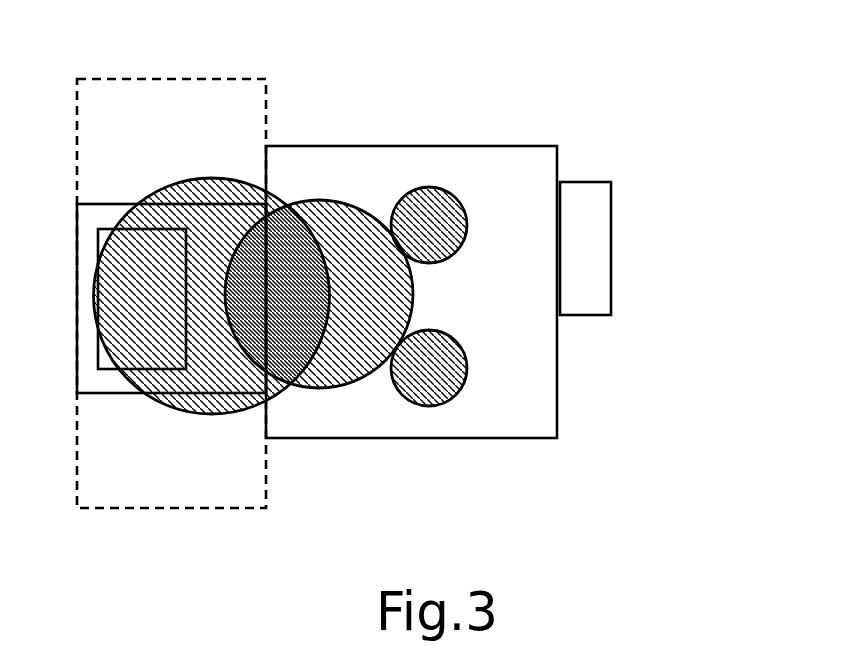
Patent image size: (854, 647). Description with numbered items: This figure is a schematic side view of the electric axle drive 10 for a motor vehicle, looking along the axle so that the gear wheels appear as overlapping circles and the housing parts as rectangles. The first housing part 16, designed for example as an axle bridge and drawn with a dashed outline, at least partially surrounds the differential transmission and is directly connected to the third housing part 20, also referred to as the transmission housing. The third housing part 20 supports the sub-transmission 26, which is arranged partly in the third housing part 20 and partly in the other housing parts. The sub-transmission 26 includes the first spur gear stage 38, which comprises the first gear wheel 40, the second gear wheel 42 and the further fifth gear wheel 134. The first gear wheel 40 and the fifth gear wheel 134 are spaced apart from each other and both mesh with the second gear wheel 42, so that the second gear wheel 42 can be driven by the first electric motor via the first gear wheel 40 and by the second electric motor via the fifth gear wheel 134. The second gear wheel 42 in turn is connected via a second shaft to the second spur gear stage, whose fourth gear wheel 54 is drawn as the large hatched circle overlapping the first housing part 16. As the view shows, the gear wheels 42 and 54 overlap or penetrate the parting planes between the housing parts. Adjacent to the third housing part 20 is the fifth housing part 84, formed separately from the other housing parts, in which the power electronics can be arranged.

The electric axle drive 10 is at (520, 105).
The first housing part 16 is at (190, 508).
The third housing part 20 is at (560, 157).
The sub-transmission 26 is at (523, 404).
The first spur gear stage 38 is at (416, 440).
The first gear wheel 40 is at (461, 193).
The second gear wheel 42 is at (330, 392).
The fourth gear wheel 54 is at (203, 178).
The fifth housing part 84 is at (611, 208).
The fifth gear wheel 134 is at (467, 364).